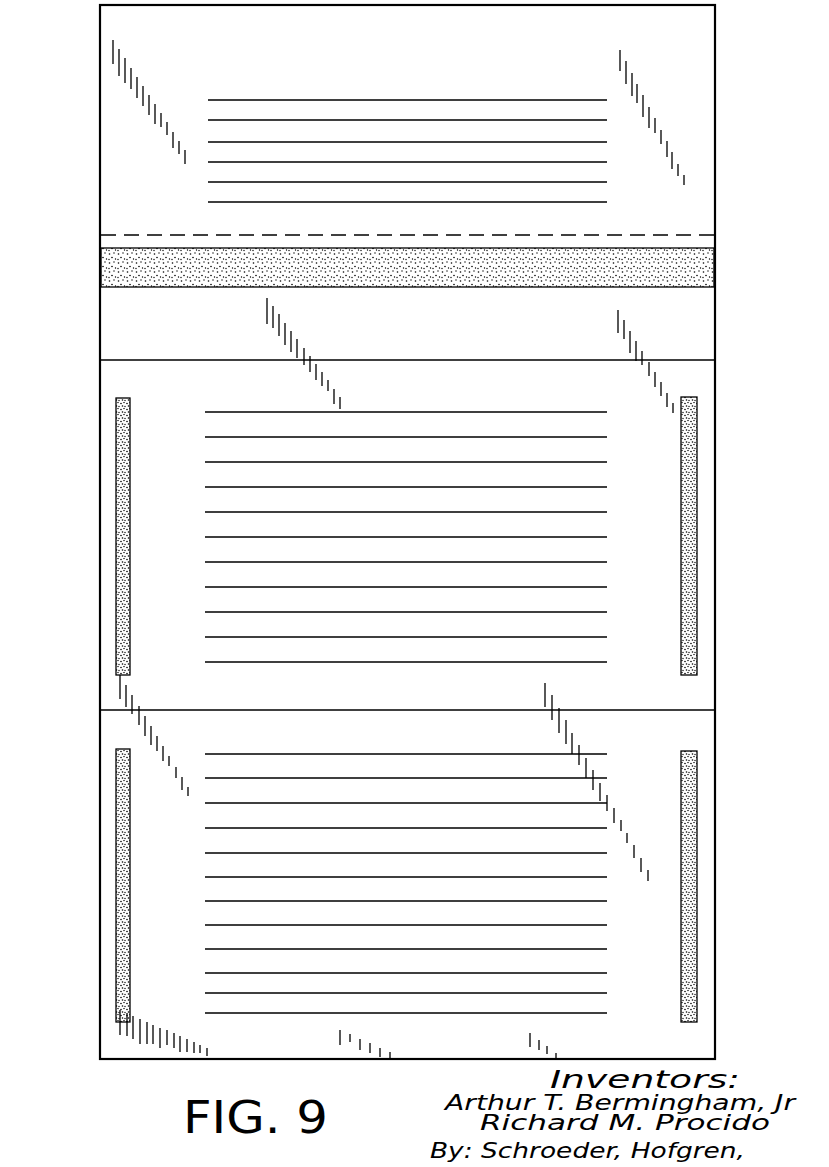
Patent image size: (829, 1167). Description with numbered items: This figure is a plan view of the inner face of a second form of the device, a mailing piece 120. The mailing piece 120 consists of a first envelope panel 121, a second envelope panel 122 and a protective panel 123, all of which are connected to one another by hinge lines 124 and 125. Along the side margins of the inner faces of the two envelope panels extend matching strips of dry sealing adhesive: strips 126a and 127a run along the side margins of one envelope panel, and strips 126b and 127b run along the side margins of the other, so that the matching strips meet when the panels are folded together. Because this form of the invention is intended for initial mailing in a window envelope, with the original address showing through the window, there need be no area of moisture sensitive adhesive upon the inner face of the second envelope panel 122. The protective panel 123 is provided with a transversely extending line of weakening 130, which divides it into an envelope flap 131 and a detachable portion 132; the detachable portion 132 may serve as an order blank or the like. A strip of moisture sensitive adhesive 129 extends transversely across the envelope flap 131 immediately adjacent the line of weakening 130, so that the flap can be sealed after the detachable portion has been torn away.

The mailing piece 120 is at (82, 141).
The protective panel 123 is at (113, 169).
The detachable portion 132 is at (695, 133).
The line of weakening 130 is at (100, 234).
The strip of moisture sensitive adhesive 129 is at (700, 270).
The envelope flap 131 is at (692, 331).
The hinge line 125 is at (120, 361).
The first envelope panel 121 is at (115, 380).
The strip of dry sealing adhesive 126a is at (118, 498).
The strip of dry sealing adhesive 127a is at (688, 498).
The hinge line 124 is at (125, 710).
The second envelope panel 122 is at (115, 732).
The strip of dry sealing adhesive 126b is at (120, 835).
The strip of dry sealing adhesive 127b is at (688, 843).